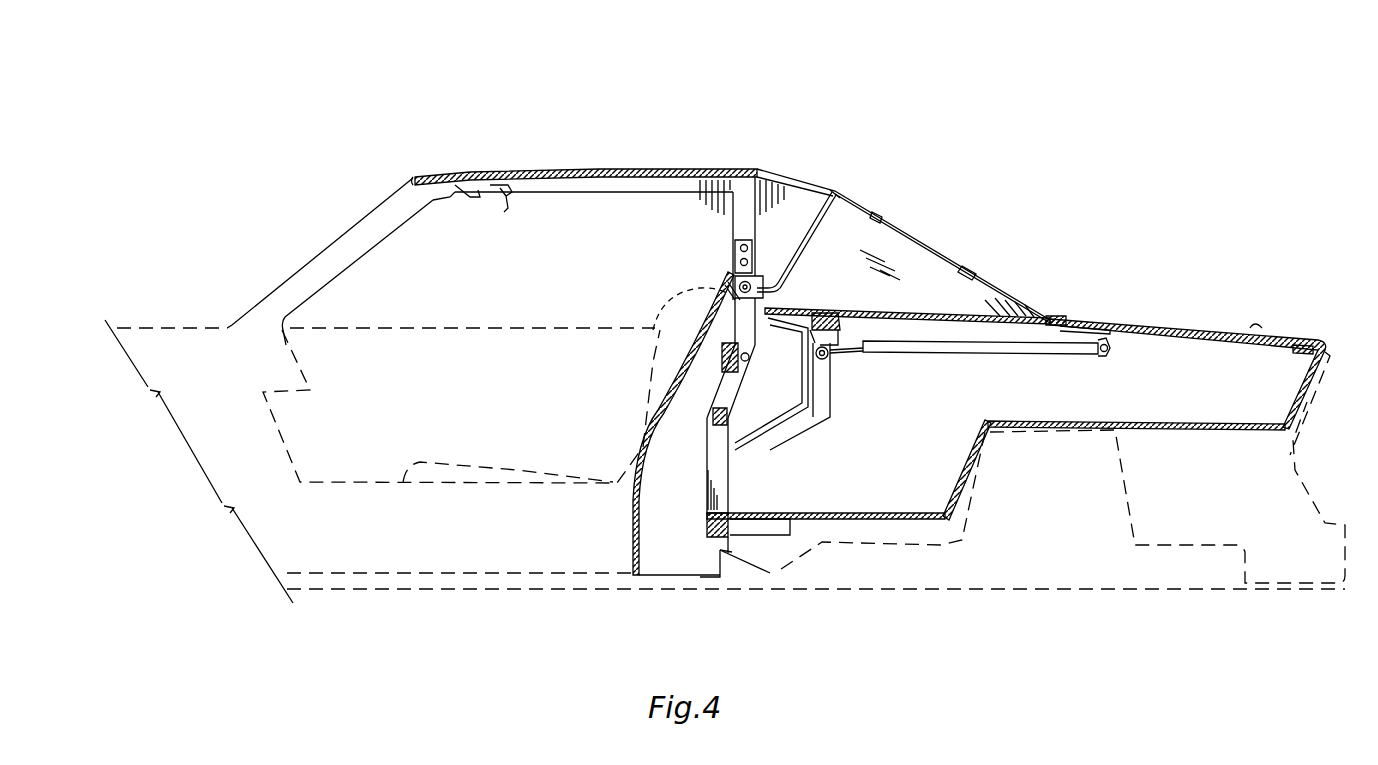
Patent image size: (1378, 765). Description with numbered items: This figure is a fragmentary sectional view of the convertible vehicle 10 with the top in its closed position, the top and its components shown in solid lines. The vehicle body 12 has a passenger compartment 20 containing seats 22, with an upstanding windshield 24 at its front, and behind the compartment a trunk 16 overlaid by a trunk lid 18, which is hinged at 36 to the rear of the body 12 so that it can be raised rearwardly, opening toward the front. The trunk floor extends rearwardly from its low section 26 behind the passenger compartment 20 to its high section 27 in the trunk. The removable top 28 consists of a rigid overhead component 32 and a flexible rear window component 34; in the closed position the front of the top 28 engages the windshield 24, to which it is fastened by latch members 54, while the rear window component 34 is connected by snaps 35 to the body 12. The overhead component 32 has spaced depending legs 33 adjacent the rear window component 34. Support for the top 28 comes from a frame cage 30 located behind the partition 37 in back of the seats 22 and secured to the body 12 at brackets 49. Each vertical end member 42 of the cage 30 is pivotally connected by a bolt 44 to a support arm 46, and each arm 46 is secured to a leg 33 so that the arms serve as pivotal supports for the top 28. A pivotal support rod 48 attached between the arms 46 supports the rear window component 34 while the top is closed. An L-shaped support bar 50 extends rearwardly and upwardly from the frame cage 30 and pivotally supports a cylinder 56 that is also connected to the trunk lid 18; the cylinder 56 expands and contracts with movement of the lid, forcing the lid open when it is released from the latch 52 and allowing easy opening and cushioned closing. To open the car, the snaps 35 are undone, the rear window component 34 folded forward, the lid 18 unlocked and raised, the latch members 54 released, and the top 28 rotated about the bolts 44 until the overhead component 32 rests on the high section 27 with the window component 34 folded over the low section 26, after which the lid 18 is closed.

The convertible vehicle 10 is at (978, 106).
The vehicle body 12 is at (380, 563).
The trunk 16 is at (1190, 356).
The trunk lid 18 is at (1232, 330).
The passenger compartment 20 is at (440, 402).
The seats 22 is at (672, 320).
The windshield 24 is at (345, 238).
The low section 26 is at (893, 512).
The high section 27 is at (1076, 430).
The removable top 28 is at (536, 152).
The frame cage 30 is at (688, 495).
The overhead component 32 is at (619, 164).
The legs 33 is at (733, 222).
The rear window component 34 is at (908, 230).
The snaps 35 is at (1057, 315).
The hinge 36 is at (1295, 352).
The partition 37 is at (633, 549).
The vertical end members 42 is at (712, 455).
The bolt 44 is at (742, 358).
The support arm 46 is at (752, 320).
The pivotal support rod 48 is at (812, 222).
The brackets 49 is at (752, 560).
The L-shaped support bar 50 is at (818, 410).
The latch 52 is at (856, 329).
The latch members 54 is at (506, 212).
The cylinder 56 is at (930, 350).